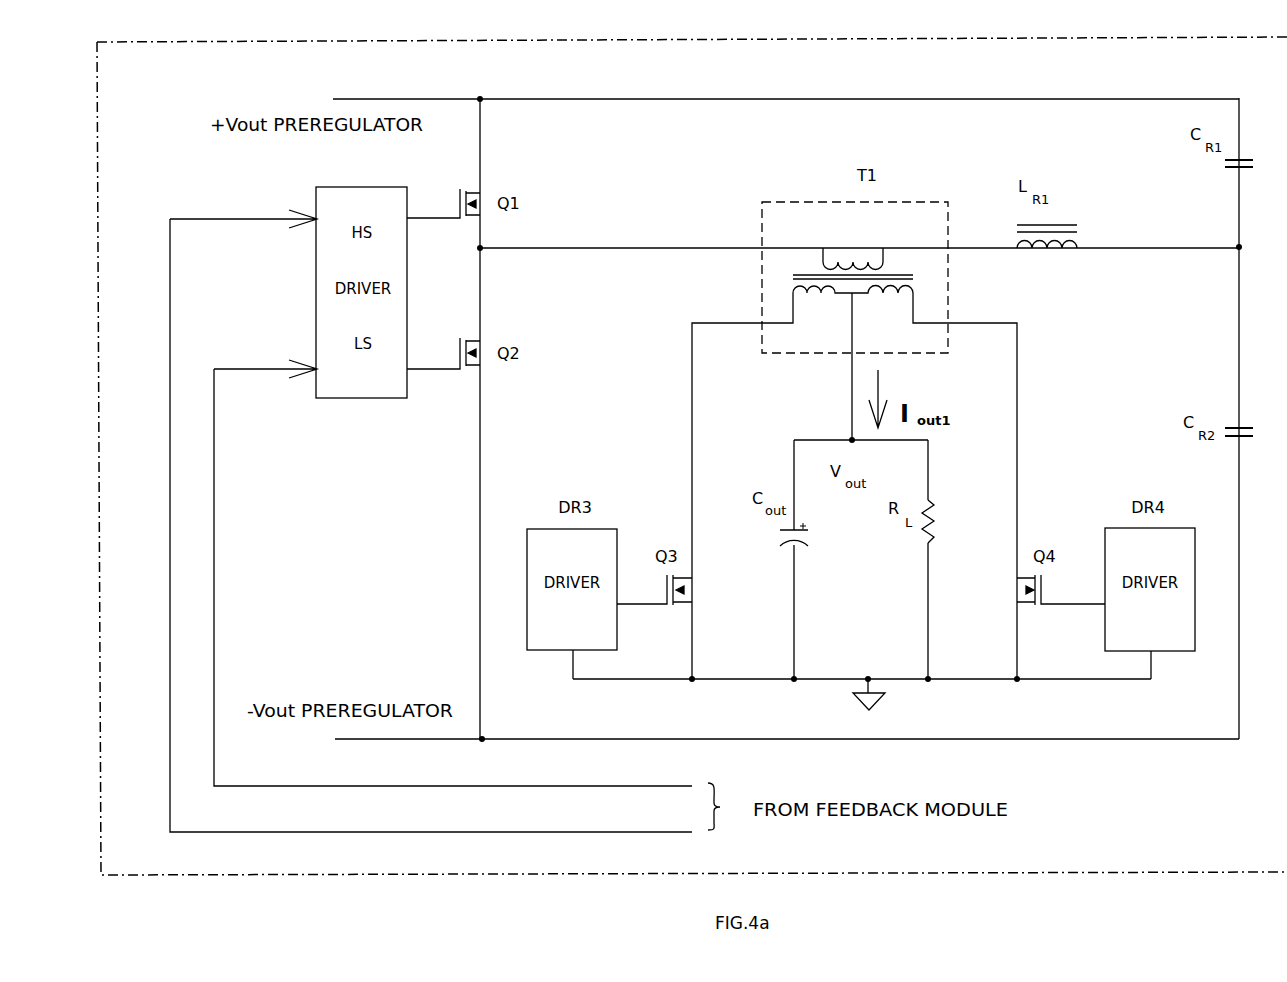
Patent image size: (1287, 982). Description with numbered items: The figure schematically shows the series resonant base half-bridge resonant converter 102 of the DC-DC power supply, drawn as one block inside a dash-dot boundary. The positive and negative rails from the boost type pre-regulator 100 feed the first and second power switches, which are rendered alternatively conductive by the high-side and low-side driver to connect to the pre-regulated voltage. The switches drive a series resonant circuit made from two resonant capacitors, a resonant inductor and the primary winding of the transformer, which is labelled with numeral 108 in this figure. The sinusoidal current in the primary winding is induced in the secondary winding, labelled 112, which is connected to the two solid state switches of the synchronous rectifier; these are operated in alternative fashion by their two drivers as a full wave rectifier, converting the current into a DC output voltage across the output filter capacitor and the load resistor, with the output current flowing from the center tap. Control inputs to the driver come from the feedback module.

The boost type pre-regulator 100 is at (786, 83).
The series resonant base half-bridge resonant converter 102 is at (692, 456).
The feedback module 108 is at (859, 249).
The transformer secondary winding T1/2 112 is at (854, 482).